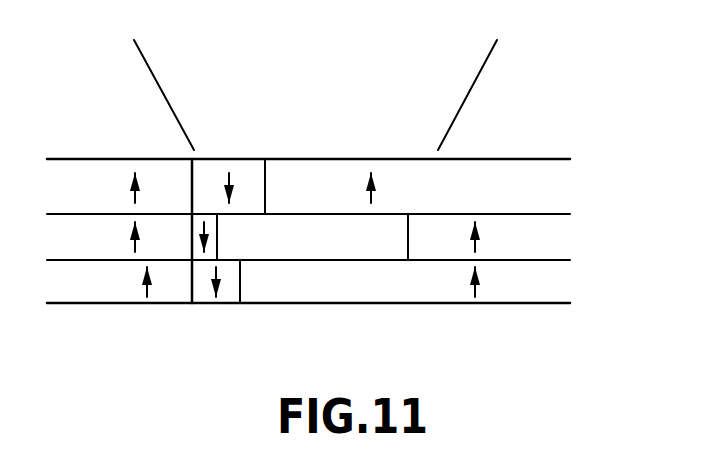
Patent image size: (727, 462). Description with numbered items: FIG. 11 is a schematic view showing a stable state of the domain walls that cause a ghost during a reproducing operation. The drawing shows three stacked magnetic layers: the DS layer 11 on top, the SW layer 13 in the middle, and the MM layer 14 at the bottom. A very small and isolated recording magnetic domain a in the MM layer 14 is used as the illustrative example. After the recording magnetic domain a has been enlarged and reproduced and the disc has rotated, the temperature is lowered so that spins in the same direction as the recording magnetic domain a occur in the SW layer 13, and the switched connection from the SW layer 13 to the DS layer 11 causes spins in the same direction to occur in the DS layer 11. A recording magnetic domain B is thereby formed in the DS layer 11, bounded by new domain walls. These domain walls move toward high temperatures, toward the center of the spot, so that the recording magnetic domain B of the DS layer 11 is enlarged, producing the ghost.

The DS layer 11 is at (558, 184).
The SW layer 13 is at (558, 236).
The MM layer 14 is at (558, 280).
The recording magnetic domain B is at (222, 160).
The recording magnetic domain a is at (200, 303).